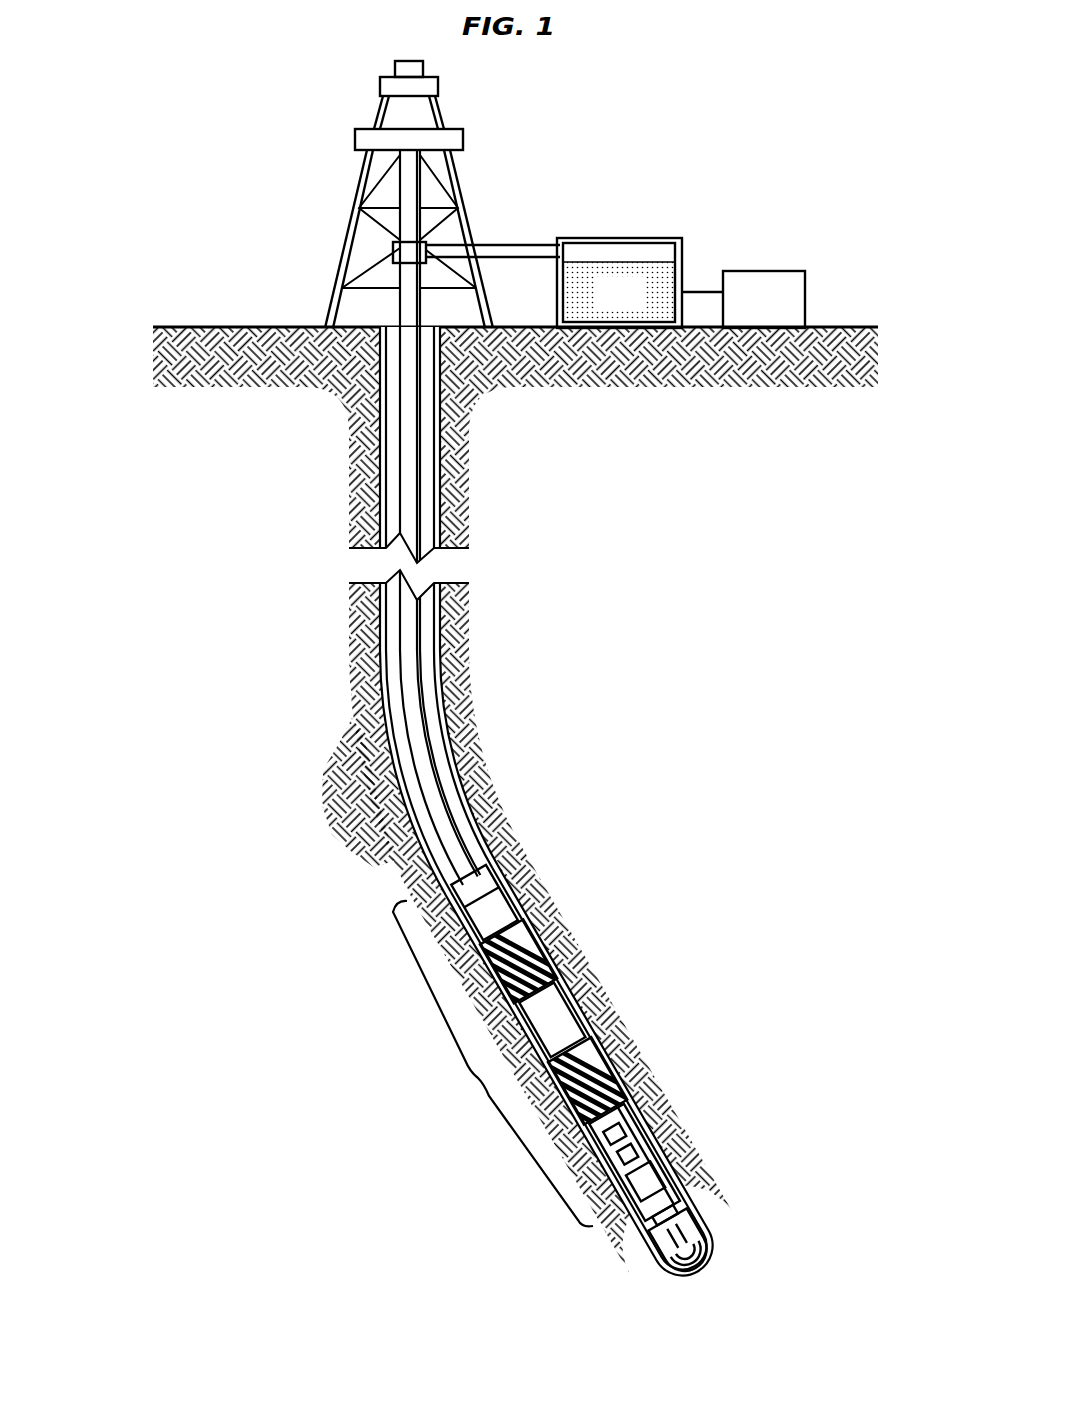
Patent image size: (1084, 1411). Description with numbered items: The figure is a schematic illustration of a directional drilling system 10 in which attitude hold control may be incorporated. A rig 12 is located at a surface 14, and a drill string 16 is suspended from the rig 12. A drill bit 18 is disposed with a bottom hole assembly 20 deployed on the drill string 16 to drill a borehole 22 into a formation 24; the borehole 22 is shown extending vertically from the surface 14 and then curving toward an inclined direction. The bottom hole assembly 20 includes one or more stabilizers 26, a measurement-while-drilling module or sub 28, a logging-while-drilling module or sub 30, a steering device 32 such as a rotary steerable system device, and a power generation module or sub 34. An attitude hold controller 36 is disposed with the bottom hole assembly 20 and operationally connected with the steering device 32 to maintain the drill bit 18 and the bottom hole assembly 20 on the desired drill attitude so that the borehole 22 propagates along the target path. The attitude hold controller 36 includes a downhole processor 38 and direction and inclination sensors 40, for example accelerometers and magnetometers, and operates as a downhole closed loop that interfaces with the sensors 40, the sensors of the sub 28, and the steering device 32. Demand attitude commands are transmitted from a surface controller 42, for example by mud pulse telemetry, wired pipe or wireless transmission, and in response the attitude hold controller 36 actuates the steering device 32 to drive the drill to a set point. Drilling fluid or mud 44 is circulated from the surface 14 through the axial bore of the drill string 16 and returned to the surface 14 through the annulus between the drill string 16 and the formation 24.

The directional drilling system 10 is at (247, 162).
The rig 12 is at (343, 242).
The surface 14 is at (242, 326).
The drill string 16 is at (413, 643).
The drill bit 18 is at (690, 1223).
The bottom hole assembly 20 is at (477, 1079).
The borehole 22 is at (391, 512).
The formation 24 is at (346, 811).
The stabilizers 26 is at (542, 950).
The measurement-while-drilling module or sub 28 is at (562, 1012).
The logging-while-drilling module or sub 30 is at (500, 902).
The steering device 32 is at (657, 1173).
The power generation module or sub 34 is at (495, 872).
The attitude hold controller 36 is at (640, 1104).
The downhole processor 38 is at (628, 1128).
The direction and inclination sensors 40 is at (642, 1146).
The surface controller 42 is at (746, 310).
The drilling fluid or mud 44 is at (601, 306).